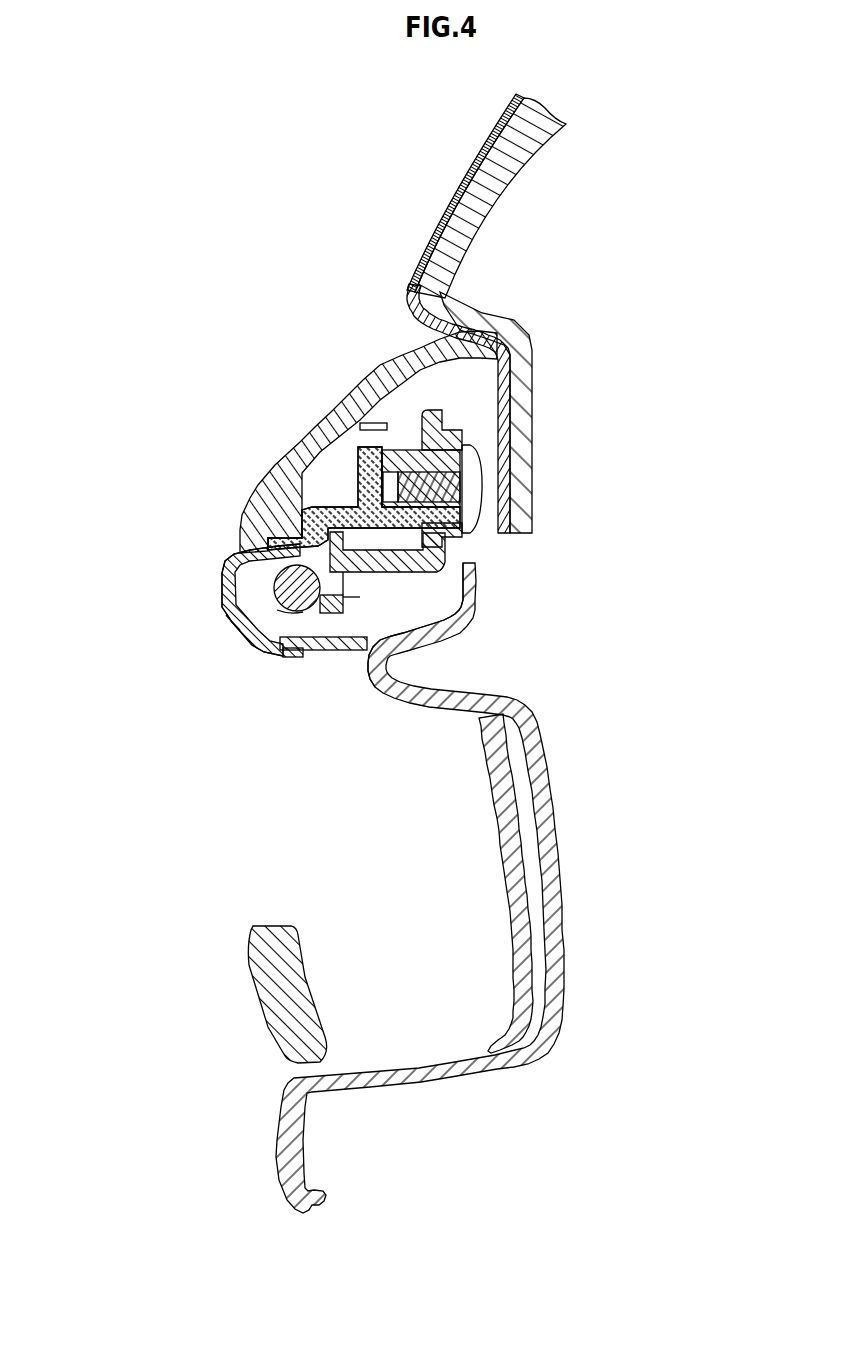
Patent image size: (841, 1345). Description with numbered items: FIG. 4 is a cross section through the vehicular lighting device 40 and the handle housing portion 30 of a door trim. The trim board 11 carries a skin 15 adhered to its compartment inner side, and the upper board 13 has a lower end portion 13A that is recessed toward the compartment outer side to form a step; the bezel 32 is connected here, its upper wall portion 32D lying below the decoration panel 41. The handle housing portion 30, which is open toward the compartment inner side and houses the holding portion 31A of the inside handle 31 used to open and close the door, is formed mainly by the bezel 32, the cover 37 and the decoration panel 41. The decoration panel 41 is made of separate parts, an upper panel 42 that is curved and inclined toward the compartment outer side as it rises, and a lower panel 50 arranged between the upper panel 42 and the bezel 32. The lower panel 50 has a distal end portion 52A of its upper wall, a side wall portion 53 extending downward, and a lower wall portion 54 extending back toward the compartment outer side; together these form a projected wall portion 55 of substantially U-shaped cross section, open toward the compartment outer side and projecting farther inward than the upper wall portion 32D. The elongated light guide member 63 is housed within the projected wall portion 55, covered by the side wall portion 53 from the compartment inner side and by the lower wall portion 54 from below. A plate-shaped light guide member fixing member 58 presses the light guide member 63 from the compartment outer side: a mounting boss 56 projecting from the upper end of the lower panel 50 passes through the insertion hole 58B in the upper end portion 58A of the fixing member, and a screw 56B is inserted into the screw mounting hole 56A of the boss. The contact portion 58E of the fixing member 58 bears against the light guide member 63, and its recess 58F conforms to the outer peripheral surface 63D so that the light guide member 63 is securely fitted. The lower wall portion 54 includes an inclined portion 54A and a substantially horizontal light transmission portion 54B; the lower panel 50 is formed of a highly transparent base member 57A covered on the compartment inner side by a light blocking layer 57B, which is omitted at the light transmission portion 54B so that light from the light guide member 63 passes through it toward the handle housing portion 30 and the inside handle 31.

The trim board 11 is at (535, 315).
The upper board 13 is at (527, 145).
The lower end portion 13A is at (532, 373).
The skin 15 is at (455, 202).
The handle housing portion 30 is at (396, 1053).
The inside handle 31 is at (218, 994).
The holding portion 31A is at (272, 1000).
The inside handle bezel 32 is at (562, 860).
The upper wall portion of the bezel 32D is at (403, 640).
The inside handle cover 37 is at (510, 810).
The vehicular lighting device 40 is at (311, 403).
The decoration panel 41 is at (319, 426).
The upper panel 42 is at (410, 358).
The lower panel 50 is at (335, 501).
The distal end portion 52A is at (228, 563).
The side wall portion 53 is at (226, 592).
The lower wall portion 54 is at (241, 622).
The inclined portion 54A is at (230, 629).
The light transmission portion 54B is at (332, 652).
The projected wall portion 55 is at (105, 560).
The mounting boss 56 is at (437, 460).
The screw mounting hole 56A is at (443, 480).
The screw 56B is at (470, 498).
The base member 57A is at (351, 704).
The light blocking layer 57B is at (297, 657).
The light guide member fixing member 58 is at (345, 555).
The upper end portion 58A is at (435, 432).
The insertion hole 58B is at (440, 514).
The contact portion 58E is at (340, 605).
The recess 58F is at (303, 603).
The light guide member 63 is at (290, 600).
The outer peripheral surface 63D is at (343, 600).